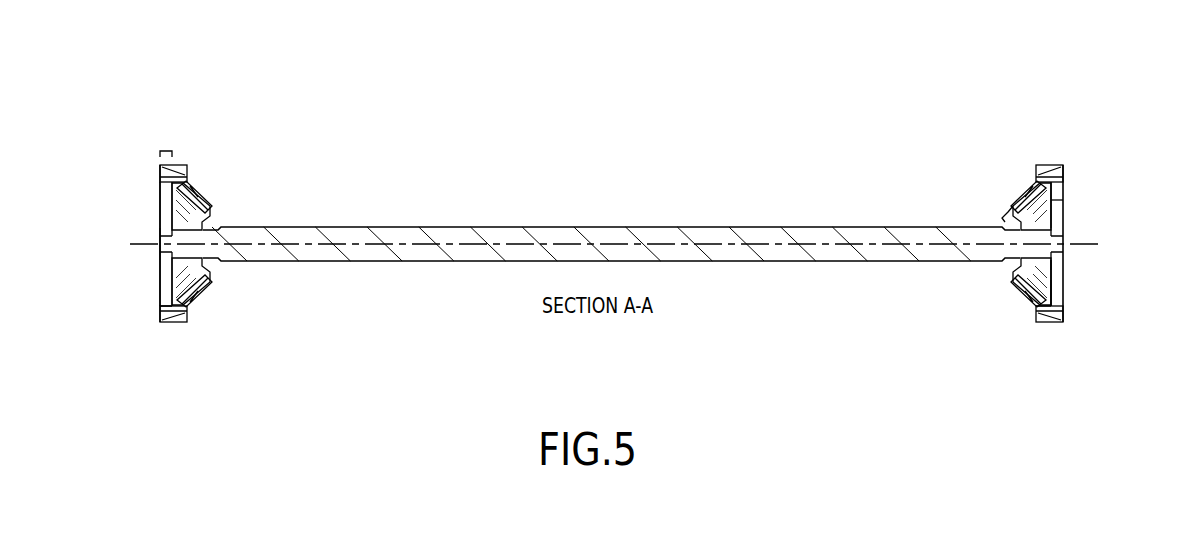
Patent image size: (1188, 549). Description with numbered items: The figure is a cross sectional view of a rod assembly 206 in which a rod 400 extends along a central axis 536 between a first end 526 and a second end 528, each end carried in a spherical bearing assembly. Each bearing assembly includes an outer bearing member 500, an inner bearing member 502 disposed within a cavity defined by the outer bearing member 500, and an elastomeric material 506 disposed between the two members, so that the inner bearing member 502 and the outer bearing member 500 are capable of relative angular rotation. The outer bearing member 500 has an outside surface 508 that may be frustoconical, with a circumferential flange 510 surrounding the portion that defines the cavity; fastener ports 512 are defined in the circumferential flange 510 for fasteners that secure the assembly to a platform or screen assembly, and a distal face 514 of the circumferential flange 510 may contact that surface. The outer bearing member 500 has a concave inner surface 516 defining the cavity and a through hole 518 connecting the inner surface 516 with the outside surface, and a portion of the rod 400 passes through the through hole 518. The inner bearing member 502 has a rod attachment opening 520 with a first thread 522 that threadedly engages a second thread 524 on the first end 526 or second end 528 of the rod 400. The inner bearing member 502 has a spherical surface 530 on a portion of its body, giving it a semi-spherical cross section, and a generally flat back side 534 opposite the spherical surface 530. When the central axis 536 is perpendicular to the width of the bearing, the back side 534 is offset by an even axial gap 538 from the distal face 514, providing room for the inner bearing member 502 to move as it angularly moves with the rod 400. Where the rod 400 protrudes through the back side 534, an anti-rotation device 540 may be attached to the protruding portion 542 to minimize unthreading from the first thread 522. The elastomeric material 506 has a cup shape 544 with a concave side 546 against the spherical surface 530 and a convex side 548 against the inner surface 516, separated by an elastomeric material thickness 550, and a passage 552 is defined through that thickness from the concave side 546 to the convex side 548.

The rod assembly 206 is at (749, 99).
The rod 400 is at (592, 245).
The outer bearing member 500 is at (210, 224).
The inner bearing member 502 is at (163, 292).
The elastomeric material 506 is at (210, 262).
The outside surface 508 is at (1003, 174).
The circumferential flange 510 is at (1057, 165).
The fastener ports 512 is at (1078, 181).
The distal face 514 is at (1057, 323).
The inner surface 516 is at (158, 208).
The through hole 518 is at (203, 268).
The rod attachment opening 520 is at (1064, 268).
The first thread 522 is at (1020, 247).
The second thread 524 is at (1031, 305).
The first end 526 is at (136, 262).
The second end 528 is at (1075, 251).
The spherical surface 530 is at (212, 215).
The back side 534 is at (166, 306).
The central axis 536 is at (402, 257).
The axial gap 538 is at (165, 150).
The anti-rotation device 540 is at (160, 239).
The protruding portion 542 is at (164, 276).
The cup shape 544 is at (1058, 200).
The concave side 546 is at (1065, 288).
The convex side 548 is at (1032, 327).
The elastomeric material thickness 550 is at (1068, 304).
The passage 552 is at (992, 217).